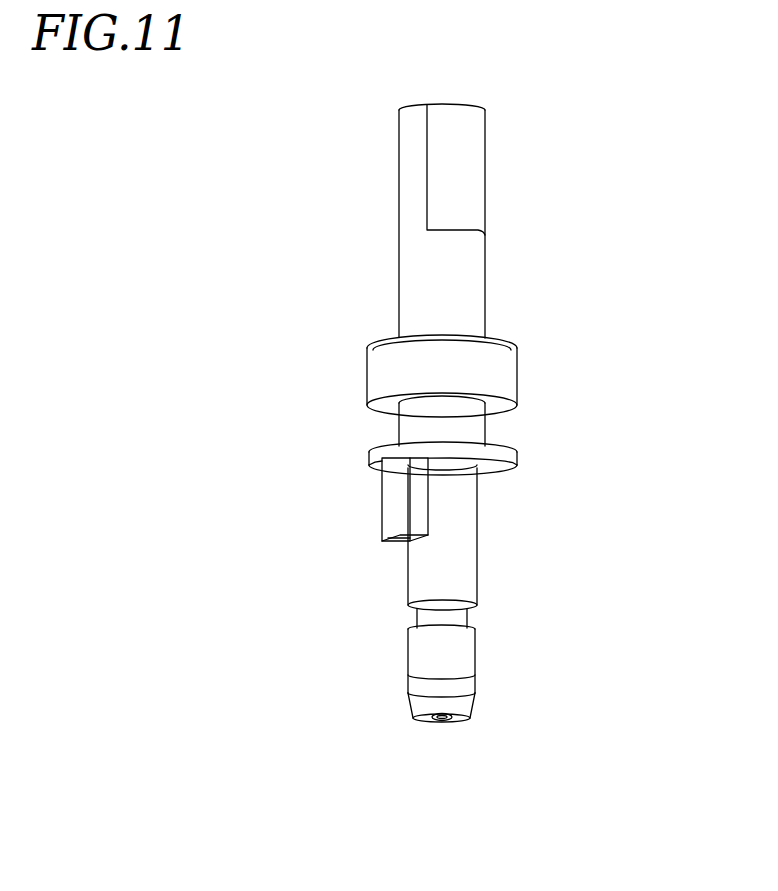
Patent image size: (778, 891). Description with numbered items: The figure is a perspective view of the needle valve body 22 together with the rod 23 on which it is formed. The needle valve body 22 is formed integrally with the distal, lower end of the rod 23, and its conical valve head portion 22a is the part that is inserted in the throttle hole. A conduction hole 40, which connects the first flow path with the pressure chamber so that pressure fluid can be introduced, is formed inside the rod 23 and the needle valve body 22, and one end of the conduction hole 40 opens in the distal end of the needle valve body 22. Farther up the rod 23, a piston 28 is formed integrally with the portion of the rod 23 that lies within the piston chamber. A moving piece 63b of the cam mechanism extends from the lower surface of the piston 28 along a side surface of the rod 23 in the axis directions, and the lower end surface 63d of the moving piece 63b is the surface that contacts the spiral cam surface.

The rod 23 is at (430, 268).
The piston 28 is at (490, 373).
The moving piece 63b is at (398, 505).
The lower end surface 63d is at (403, 540).
The needle valve body 22 is at (458, 685).
The conical valve head portion 22a is at (463, 705).
The conduction hole 40 is at (443, 721).